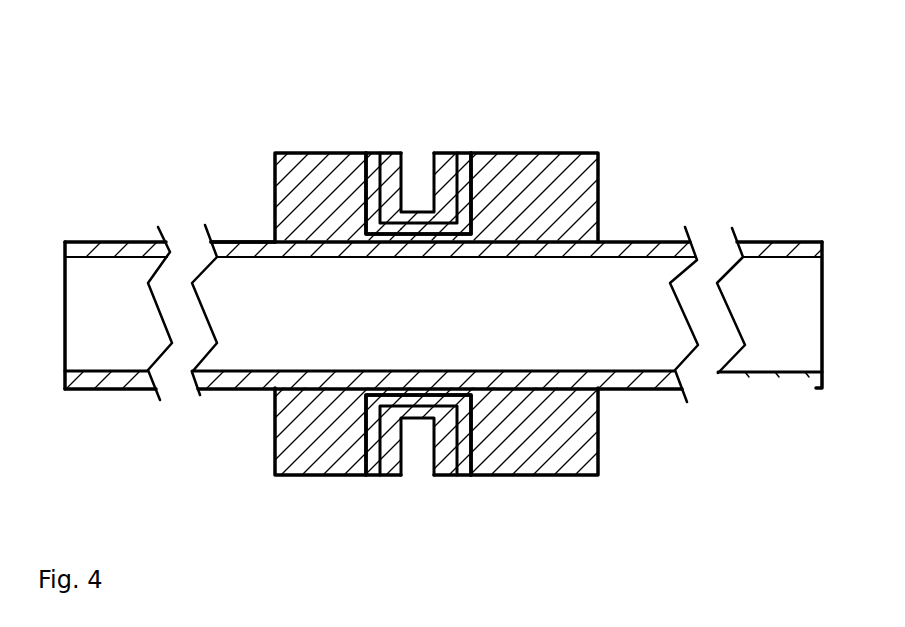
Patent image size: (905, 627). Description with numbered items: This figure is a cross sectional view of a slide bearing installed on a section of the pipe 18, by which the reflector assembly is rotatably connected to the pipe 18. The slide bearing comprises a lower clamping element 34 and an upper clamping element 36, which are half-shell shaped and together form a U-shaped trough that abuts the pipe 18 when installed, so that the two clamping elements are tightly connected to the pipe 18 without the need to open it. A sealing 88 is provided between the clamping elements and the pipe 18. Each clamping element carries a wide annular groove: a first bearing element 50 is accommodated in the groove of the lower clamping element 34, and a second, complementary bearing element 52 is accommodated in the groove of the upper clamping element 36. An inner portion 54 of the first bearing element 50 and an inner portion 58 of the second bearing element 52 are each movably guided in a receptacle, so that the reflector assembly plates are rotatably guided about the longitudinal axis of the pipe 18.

The pipe 18 is at (443, 321).
The lower clamping element 34 is at (563, 457).
The upper clamping element 36 is at (565, 180).
The first bearing element 50 is at (463, 430).
The second bearing element 52 is at (463, 180).
The inner portion of the first bearing element 54 is at (388, 448).
The inner portion of the second bearing element 58 is at (388, 165).
The sealing 88 is at (262, 240).